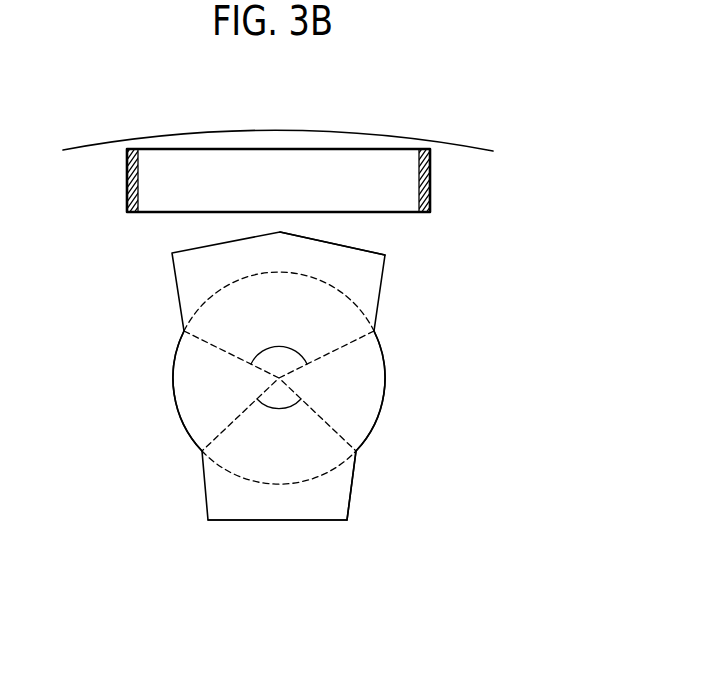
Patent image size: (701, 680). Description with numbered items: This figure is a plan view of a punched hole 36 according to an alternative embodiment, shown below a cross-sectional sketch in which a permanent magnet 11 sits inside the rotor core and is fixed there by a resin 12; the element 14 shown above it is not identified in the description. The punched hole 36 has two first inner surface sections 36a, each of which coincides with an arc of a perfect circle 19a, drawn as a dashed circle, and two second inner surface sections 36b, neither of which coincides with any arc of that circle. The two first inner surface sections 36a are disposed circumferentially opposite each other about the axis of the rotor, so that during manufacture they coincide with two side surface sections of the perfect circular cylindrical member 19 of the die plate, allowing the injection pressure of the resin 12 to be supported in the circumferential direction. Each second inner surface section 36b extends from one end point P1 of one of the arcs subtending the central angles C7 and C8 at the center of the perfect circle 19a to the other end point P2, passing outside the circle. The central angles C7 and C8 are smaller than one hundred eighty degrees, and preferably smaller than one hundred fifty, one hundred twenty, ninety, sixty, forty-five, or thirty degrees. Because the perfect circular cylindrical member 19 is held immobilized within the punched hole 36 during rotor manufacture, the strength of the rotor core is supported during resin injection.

The permanent magnet 11 is at (210, 178).
The resin 12 is at (431, 175).
The cover glass 14 is at (300, 150).
The perfect circular cylindrical member 19 is at (220, 450).
The perfect circle 19a is at (247, 481).
The punched hole 36 is at (296, 507).
The first inner surface section 36a is at (386, 378).
The second inner surface section 36b is at (365, 249).
The end point P1 is at (375, 331).
The end point P2 is at (184, 331).
The central angle C7 is at (279, 341).
The central angle C8 is at (279, 422).